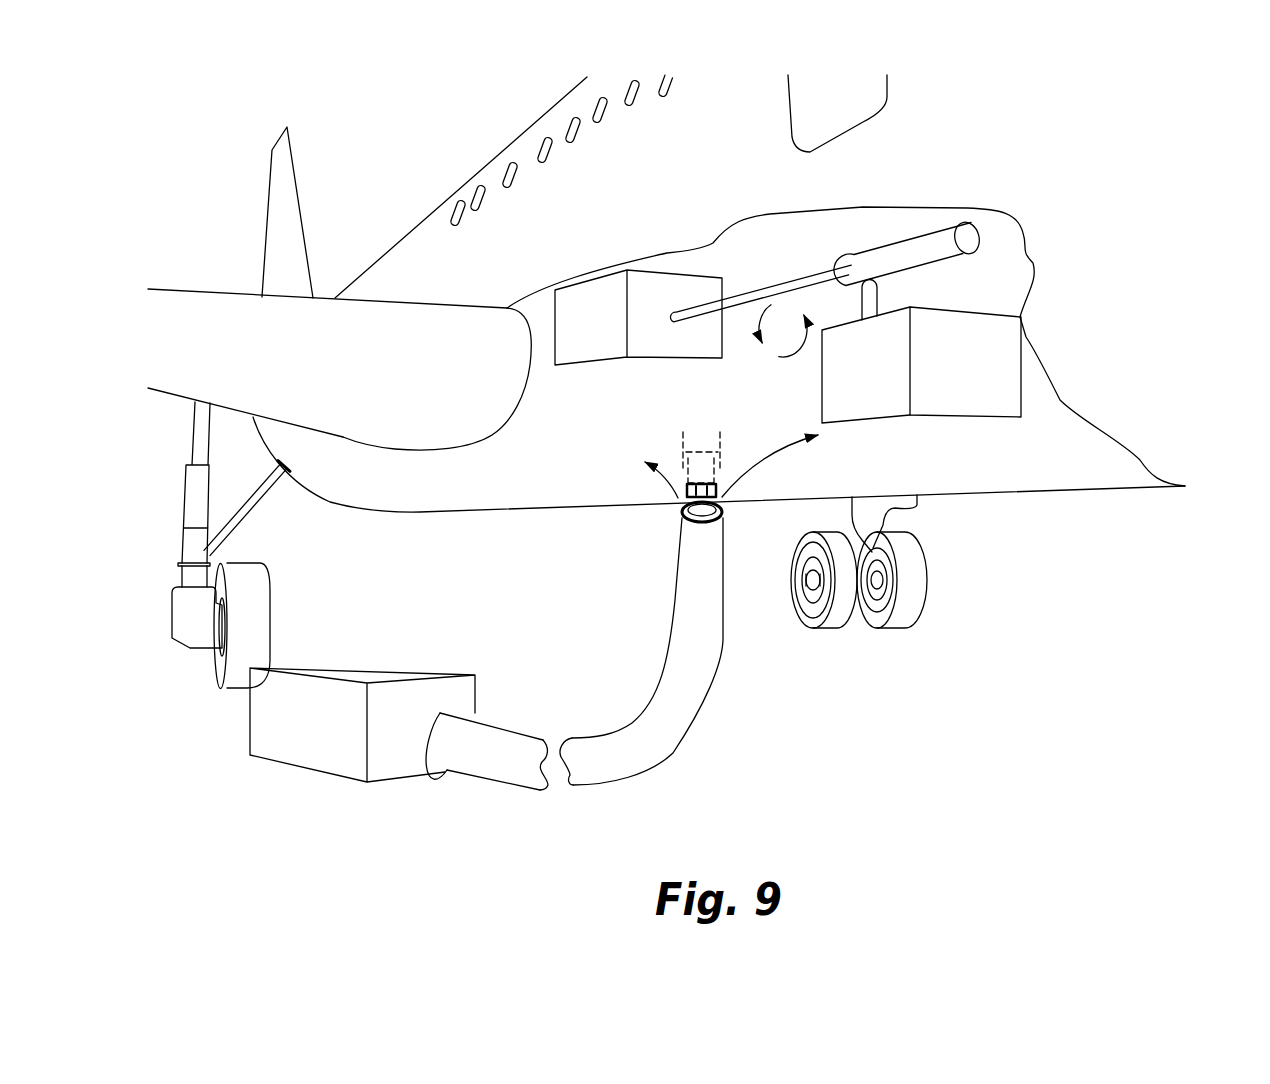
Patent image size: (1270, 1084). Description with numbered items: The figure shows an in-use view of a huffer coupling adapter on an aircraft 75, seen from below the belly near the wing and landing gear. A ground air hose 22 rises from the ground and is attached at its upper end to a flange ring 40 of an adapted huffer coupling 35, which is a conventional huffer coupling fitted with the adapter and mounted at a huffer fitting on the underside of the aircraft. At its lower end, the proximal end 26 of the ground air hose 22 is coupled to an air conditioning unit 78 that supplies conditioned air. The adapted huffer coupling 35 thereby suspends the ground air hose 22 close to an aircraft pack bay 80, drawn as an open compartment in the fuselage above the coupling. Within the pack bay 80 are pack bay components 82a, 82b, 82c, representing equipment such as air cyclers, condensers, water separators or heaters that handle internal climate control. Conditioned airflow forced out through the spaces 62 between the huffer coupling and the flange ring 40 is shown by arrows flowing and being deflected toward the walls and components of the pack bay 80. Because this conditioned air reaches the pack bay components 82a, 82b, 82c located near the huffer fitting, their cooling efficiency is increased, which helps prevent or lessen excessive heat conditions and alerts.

The aircraft 75 is at (425, 178).
The pack bay component 82a is at (583, 337).
The pack bay component 82b is at (925, 252).
The pack bay component 82c is at (957, 378).
The aircraft pack bay 80 is at (997, 502).
The flange ring 40 is at (722, 516).
The adapted huffer coupling 35 is at (668, 498).
The spaces 62 is at (665, 474).
The ground air hose 22 is at (705, 613).
The air conditioning unit 78 is at (373, 677).
The proximal end 26 is at (427, 747).